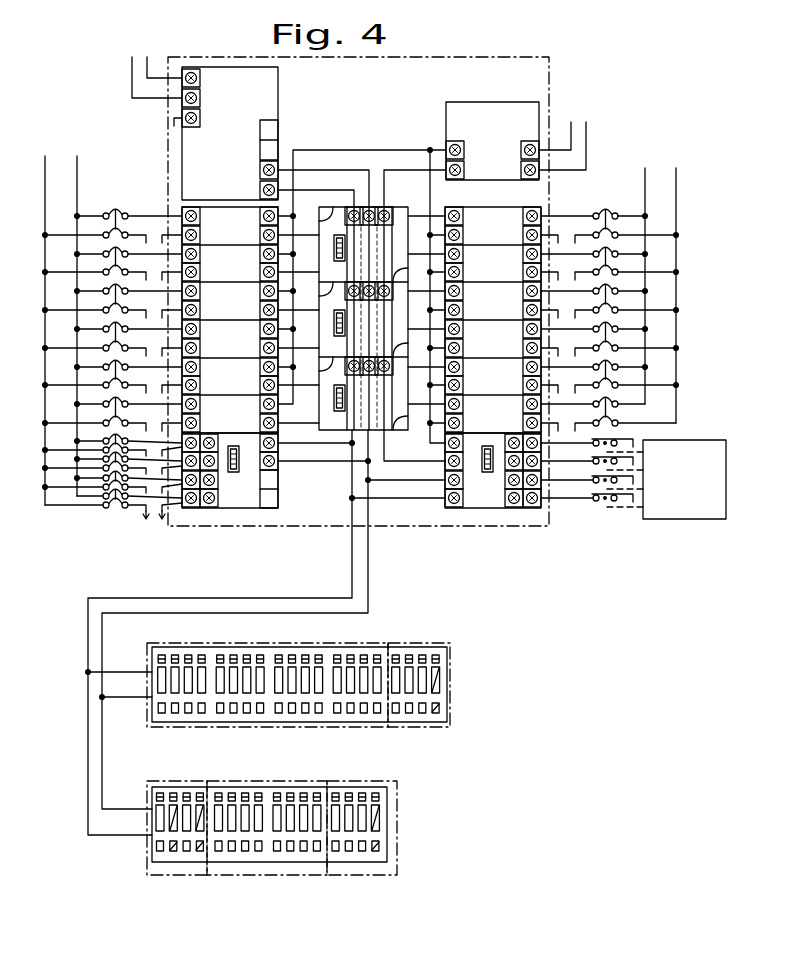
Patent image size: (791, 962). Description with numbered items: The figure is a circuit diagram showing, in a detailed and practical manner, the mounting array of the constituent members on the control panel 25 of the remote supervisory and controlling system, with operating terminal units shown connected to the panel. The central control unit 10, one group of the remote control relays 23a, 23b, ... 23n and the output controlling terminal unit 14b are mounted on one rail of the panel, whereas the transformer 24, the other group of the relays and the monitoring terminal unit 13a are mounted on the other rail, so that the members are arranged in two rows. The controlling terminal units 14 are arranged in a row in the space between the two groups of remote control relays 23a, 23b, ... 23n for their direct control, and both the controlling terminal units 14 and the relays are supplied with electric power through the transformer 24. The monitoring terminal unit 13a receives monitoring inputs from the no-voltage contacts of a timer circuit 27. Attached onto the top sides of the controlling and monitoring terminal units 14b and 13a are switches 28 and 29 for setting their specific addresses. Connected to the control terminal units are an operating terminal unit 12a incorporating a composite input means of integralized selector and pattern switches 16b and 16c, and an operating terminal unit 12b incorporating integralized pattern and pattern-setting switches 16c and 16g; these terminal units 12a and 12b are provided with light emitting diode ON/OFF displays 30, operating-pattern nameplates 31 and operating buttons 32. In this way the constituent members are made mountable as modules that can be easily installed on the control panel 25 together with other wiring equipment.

The central control unit 10 is at (279, 92).
The terminal unit 12a is at (447, 697).
The terminal unit 12b is at (397, 823).
The monitoring terminal unit 13a is at (495, 499).
The controlling terminal unit 14 is at (373, 210).
The output controlling terminal unit 14b is at (249, 499).
The selector switch 16b is at (357, 722).
The pattern switch 16c is at (416, 722).
The pattern-setting switch 16g is at (183, 862).
The remote control relay 23a is at (208, 228).
The remote control relay 23b is at (523, 212).
The remote control relay 23n is at (503, 420).
The transformer 24 is at (493, 104).
The control panel 25 is at (100, 88).
The timer circuit 27 is at (681, 520).
The switch 28 is at (240, 469).
The switch 29 is at (505, 490).
The ON/OFF display 30 is at (157, 659).
The operating-pattern nameplate 31 is at (161, 686).
The operating button 32 is at (158, 712).